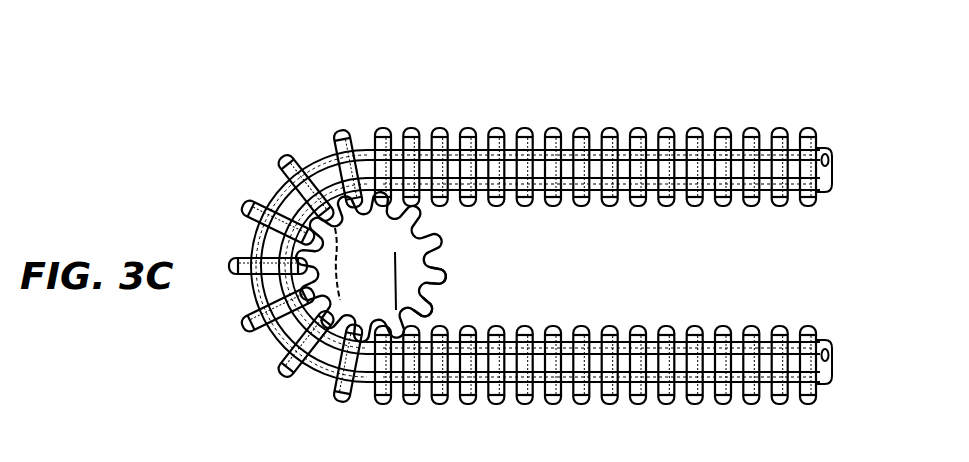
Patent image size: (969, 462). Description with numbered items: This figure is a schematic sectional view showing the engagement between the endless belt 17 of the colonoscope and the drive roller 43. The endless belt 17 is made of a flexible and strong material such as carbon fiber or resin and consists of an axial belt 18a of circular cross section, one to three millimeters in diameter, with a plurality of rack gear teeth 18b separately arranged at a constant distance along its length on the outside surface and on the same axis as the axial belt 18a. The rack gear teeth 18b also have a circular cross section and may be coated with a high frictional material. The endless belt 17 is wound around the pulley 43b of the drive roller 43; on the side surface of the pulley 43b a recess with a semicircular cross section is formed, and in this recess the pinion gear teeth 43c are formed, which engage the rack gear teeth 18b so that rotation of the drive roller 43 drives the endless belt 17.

The endless belt 17 is at (528, 112).
The axial belt 18a is at (595, 147).
The rack gear teeth 18b is at (637, 132).
The drive roller 43 is at (470, 252).
The pulley 43b is at (387, 270).
The pinion gear teeth 43c is at (430, 310).